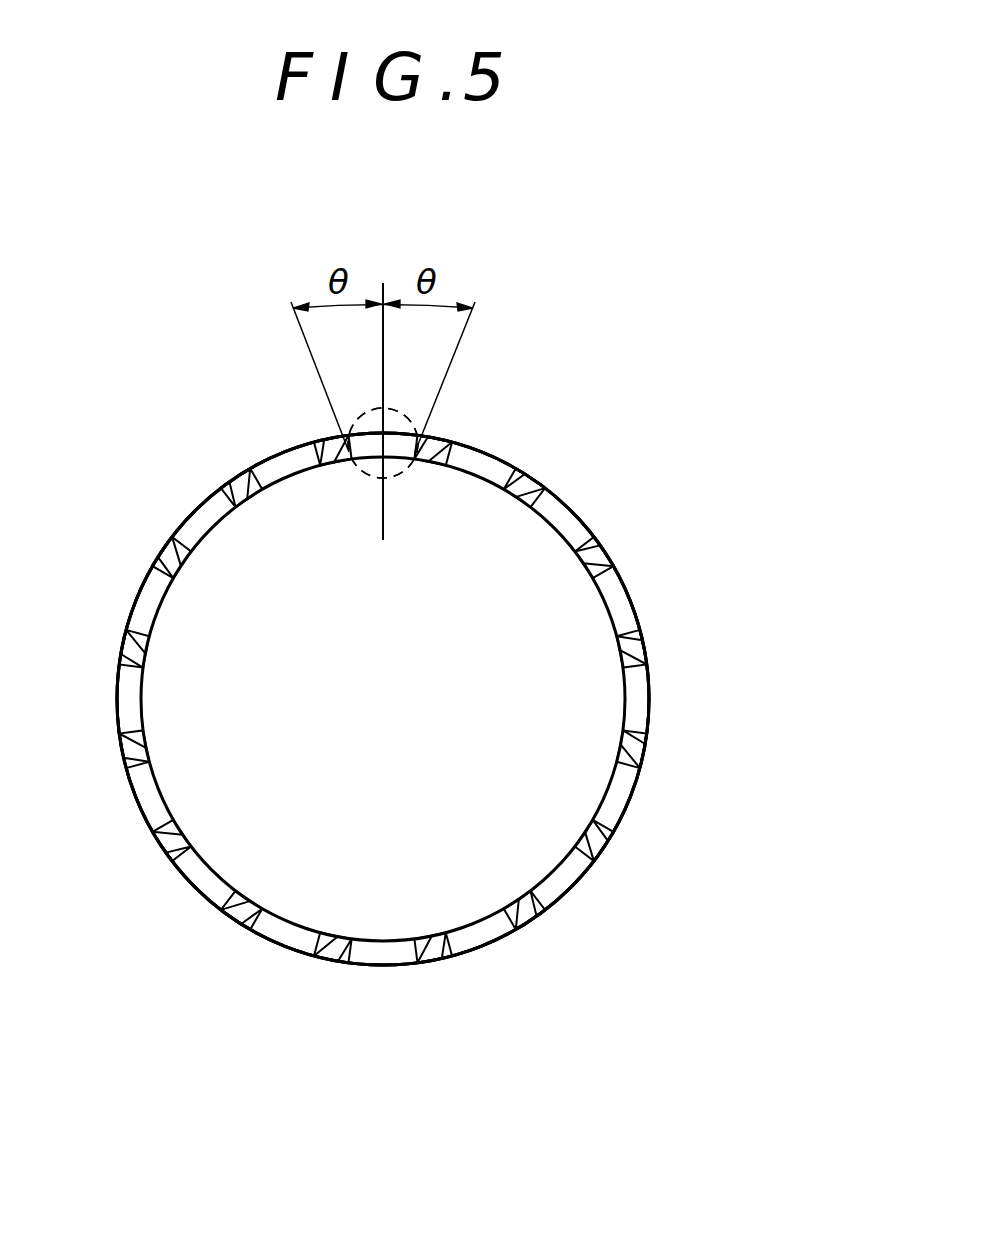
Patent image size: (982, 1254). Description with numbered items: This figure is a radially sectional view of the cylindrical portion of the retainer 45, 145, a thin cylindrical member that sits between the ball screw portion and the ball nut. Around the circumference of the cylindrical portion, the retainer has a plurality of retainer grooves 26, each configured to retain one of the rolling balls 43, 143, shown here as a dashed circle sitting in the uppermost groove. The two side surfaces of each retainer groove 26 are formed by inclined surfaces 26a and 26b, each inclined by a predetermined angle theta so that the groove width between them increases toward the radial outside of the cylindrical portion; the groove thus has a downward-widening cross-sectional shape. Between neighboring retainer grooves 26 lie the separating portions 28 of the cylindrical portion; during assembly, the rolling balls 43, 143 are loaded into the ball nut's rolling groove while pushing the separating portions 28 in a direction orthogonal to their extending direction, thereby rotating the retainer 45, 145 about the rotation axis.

The retainer groove 26 is at (392, 456).
The inclined surface 26a is at (350, 432).
The inclined surface 26b is at (420, 428).
The separating portion 28 is at (163, 543).
The rolling ball 43 is at (353, 473).
The rolling ball 143 is at (383, 443).
The retainer 45 is at (610, 548).
The retainer 145 is at (383, 699).